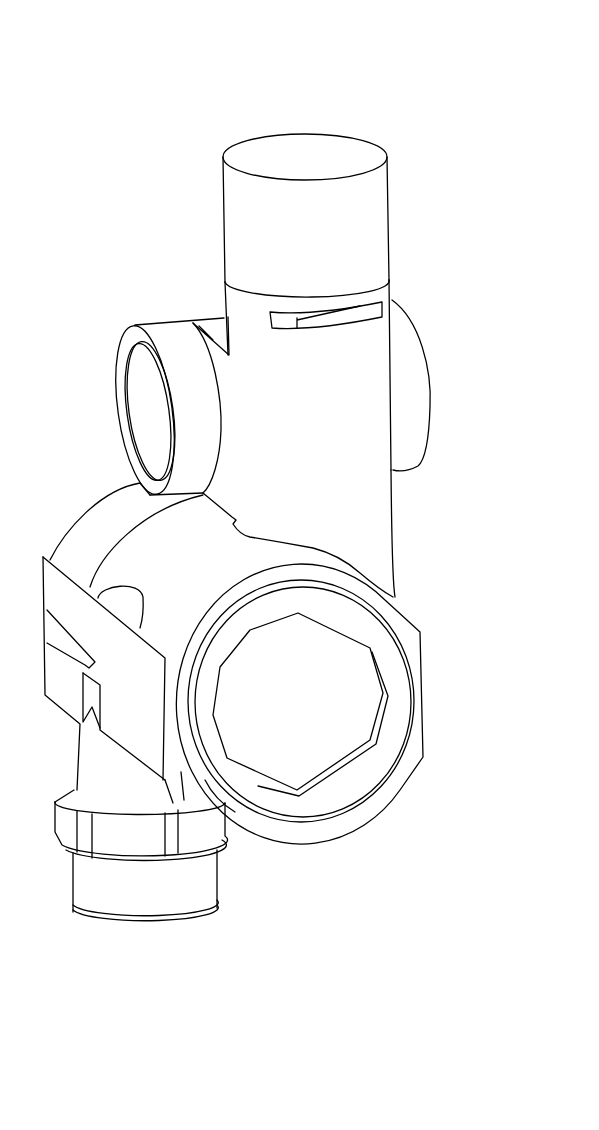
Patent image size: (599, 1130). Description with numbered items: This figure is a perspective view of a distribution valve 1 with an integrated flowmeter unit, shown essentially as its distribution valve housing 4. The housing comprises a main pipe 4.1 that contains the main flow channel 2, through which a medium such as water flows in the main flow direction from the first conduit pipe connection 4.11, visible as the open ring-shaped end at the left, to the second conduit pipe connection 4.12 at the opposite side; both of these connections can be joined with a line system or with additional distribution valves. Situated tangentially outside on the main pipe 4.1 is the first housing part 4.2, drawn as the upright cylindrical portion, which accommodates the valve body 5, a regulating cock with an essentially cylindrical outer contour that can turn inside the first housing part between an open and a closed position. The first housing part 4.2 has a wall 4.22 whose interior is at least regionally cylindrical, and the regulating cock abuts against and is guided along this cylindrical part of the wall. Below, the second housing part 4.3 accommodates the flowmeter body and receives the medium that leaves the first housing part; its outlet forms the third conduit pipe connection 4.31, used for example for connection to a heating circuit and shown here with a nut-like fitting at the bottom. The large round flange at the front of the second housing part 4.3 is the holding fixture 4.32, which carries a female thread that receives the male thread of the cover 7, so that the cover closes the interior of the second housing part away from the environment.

The distribution valve 1 is at (420, 117).
The main flow channel 2 is at (145, 408).
The distribution valve housing 4 is at (181, 262).
The main pipe 4.1 is at (156, 322).
The first conduit pipe connection 4.11 is at (120, 362).
The second conduit pipe connection 4.12 is at (420, 350).
The first housing part 4.2 is at (398, 545).
The wall 4.22 is at (373, 518).
The second housing part 4.3 is at (82, 517).
The third conduit pipe connection 4.31 is at (107, 918).
The holding fixture 4.32 is at (225, 803).
The valve body 5 is at (389, 227).
The cover 7 is at (356, 686).